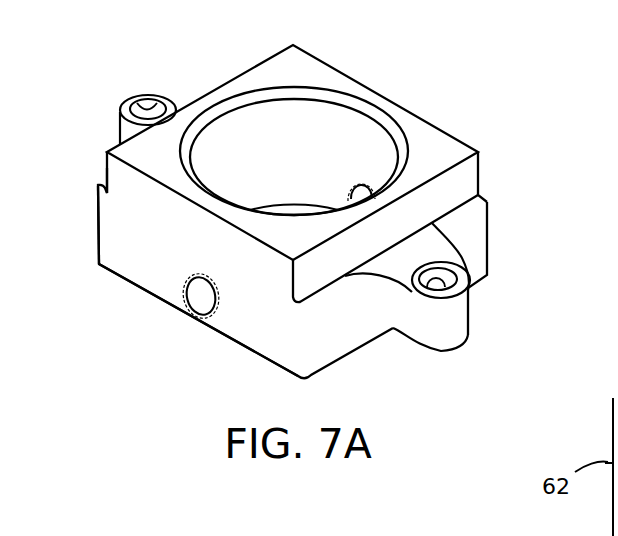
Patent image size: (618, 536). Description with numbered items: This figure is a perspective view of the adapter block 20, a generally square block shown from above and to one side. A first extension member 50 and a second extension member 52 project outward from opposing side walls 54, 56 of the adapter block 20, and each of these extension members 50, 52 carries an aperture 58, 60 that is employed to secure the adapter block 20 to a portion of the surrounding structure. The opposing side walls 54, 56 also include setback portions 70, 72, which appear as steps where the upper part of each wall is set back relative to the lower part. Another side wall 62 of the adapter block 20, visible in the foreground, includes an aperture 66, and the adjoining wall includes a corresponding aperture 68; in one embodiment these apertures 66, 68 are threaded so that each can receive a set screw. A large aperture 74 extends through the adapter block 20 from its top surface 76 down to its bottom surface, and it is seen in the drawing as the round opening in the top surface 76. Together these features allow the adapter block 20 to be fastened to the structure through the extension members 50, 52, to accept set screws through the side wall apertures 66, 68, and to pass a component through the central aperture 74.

The adapter block 20 is at (457, 79).
The first extension member 50 is at (450, 315).
The second extension member 52 is at (123, 102).
The side wall 54 is at (472, 243).
The side wall 56 is at (98, 228).
The aperture 58 is at (432, 281).
The aperture 60 is at (143, 104).
The side wall 62 is at (158, 255).
The aperture 66 is at (216, 297).
The aperture 68 is at (364, 178).
The setback portion 70 is at (470, 180).
The setback portion 72 is at (108, 168).
The aperture 74 is at (298, 148).
The top surface 76 is at (433, 150).